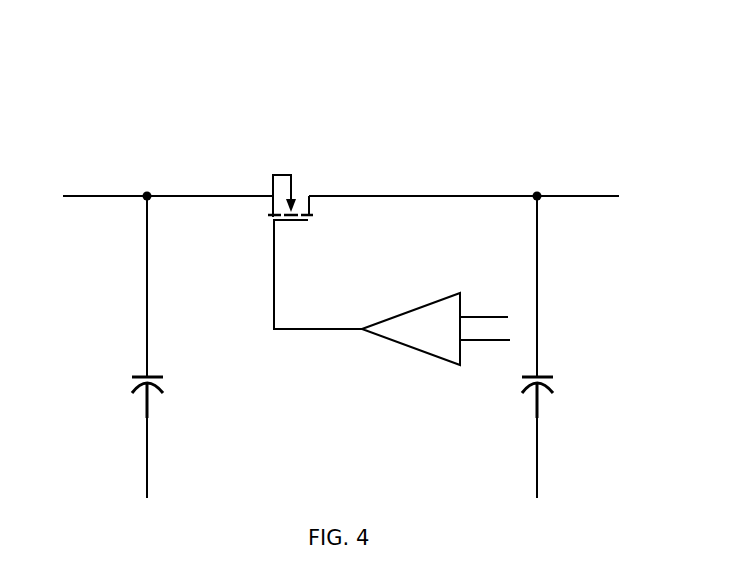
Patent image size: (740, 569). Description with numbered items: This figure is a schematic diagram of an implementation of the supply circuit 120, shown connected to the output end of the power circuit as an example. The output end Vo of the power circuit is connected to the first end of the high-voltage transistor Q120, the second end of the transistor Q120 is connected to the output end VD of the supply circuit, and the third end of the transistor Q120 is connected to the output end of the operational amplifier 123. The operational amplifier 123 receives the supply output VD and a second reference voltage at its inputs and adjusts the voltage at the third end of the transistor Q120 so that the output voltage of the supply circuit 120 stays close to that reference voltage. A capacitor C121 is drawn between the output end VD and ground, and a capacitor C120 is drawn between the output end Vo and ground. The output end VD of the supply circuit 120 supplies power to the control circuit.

The supply circuit 120 is at (122, 87).
The high-voltage transistor Q120 is at (291, 176).
The operational amplifier 123 is at (394, 293).
The capacitor C121 is at (180, 347).
The capacitor C120 is at (570, 347).